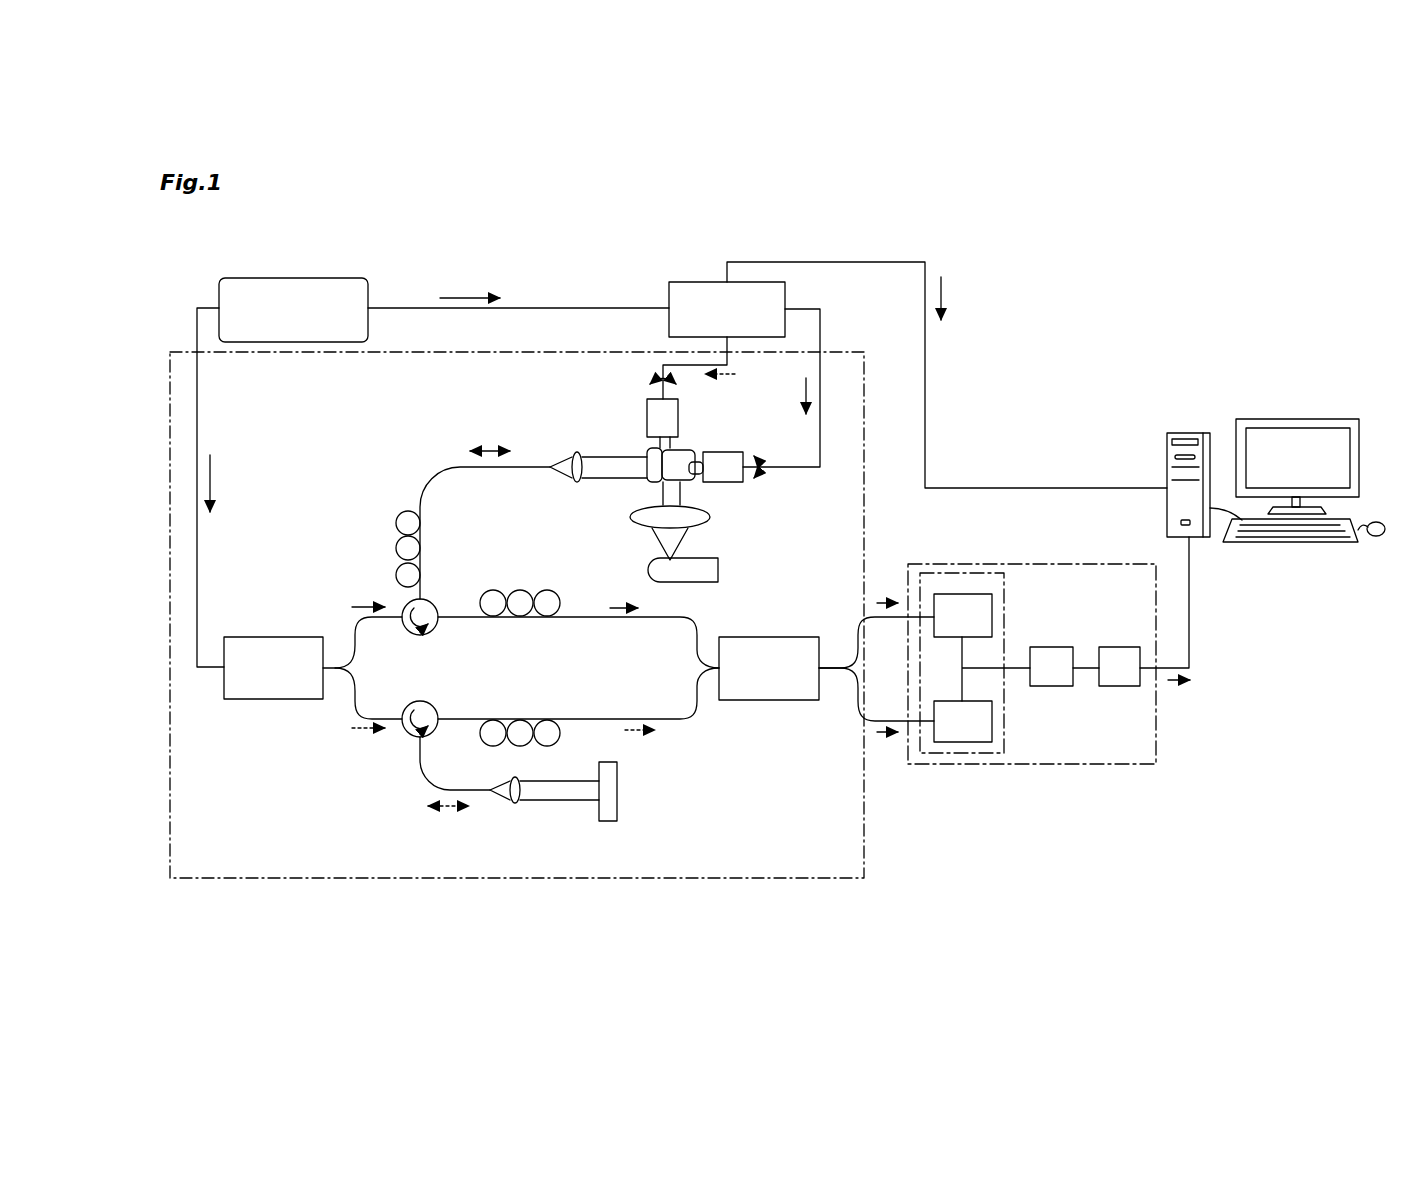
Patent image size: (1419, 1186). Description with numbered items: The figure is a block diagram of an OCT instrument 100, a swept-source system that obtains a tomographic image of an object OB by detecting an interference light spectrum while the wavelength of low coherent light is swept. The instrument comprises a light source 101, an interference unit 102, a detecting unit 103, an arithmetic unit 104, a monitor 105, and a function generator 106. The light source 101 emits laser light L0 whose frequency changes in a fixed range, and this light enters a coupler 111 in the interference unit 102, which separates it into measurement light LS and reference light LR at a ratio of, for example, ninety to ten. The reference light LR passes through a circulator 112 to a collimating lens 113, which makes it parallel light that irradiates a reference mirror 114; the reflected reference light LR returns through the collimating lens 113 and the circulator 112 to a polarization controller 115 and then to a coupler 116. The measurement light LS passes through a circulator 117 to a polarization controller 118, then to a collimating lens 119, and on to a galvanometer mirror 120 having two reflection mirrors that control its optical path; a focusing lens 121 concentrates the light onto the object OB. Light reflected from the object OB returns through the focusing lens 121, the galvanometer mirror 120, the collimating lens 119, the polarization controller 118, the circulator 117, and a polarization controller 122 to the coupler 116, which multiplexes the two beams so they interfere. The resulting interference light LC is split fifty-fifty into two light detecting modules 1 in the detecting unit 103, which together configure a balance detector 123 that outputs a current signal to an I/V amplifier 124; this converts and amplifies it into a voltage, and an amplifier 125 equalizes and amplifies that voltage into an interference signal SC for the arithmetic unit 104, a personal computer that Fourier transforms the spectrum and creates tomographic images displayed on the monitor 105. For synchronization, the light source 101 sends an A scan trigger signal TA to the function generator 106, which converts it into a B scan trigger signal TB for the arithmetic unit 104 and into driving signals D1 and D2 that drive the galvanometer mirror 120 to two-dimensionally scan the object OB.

The OCT instrument 100 is at (1108, 219).
The light source 101 is at (298, 278).
The interference unit 102 is at (490, 880).
The detecting unit 103 is at (1050, 765).
The arithmetic unit 104 is at (1188, 433).
The monitor 105 is at (1303, 419).
The function generator 106 is at (683, 282).
The coupler 111 is at (272, 637).
The circulator 112 is at (432, 703).
The collimating lens 113 is at (518, 804).
The reference mirror 114 is at (607, 822).
The polarization controller 115 is at (522, 747).
The coupler 116 is at (773, 637).
The circulator 117 is at (432, 602).
The polarization controller 118 is at (396, 546).
The collimating lens 119 is at (577, 452).
The galvanometer mirror 120 is at (703, 440).
The focusing lens 121 is at (632, 517).
The polarization controller 122 is at (517, 590).
The balance detector 123 is at (1010, 583).
The I/V amplifier 124 is at (1050, 647).
The amplifier 125 is at (1118, 647).
The light detecting module 1 is at (962, 594).
The A scan trigger signal TA is at (460, 297).
The B scan trigger signal TB is at (946, 300).
The laser light L0 is at (215, 472).
The measurement light LS is at (356, 606).
The reference light LR is at (358, 731).
The interference light LC is at (882, 602).
The driving signal D1 is at (728, 378).
The driving signal D2 is at (804, 389).
The object OB is at (722, 568).
The interference signal SC is at (1172, 682).